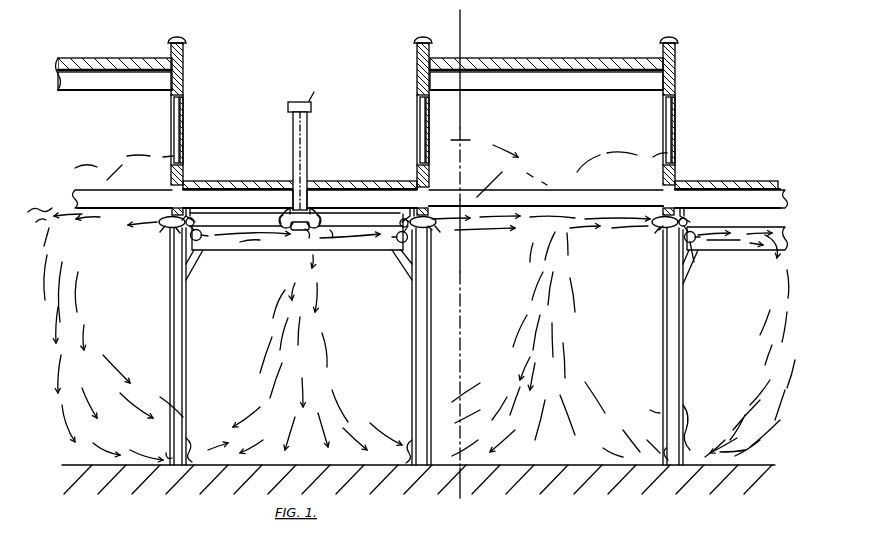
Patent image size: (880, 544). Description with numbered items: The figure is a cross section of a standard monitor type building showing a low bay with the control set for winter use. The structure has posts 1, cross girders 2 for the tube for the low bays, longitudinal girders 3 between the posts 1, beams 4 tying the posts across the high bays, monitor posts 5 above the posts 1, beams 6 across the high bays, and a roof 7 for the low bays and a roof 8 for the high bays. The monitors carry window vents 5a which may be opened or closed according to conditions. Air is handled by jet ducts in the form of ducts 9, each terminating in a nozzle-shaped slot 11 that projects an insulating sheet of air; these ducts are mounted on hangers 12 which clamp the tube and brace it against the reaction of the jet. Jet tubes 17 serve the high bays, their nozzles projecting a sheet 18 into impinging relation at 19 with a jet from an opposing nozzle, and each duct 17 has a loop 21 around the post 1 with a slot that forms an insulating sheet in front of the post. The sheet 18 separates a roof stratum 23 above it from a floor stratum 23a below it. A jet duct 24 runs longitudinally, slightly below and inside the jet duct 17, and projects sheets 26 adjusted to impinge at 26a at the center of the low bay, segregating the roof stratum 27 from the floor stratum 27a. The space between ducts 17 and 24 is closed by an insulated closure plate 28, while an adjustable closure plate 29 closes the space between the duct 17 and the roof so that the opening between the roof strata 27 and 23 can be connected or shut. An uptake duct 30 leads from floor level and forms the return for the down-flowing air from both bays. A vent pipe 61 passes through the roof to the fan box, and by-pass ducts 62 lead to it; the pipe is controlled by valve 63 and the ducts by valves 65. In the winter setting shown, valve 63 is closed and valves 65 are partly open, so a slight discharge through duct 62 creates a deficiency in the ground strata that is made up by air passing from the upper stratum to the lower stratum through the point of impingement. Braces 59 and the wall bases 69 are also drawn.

The post 1 is at (168, 329).
The cross girder 2 is at (228, 194).
The longitudinal girder 3 is at (140, 197).
The beam 4 is at (435, 306).
The monitor post 5 is at (172, 108).
The window vent 5a is at (183, 140).
The beam 6 is at (92, 90).
The roof 7 is at (199, 185).
The roof 8 is at (70, 66).
The duct 9 is at (694, 262).
The nozzle-shaped slot 11 is at (176, 230).
The hanger 12 is at (55, 265).
The jet tube 17 is at (196, 212).
The sheet 18 is at (108, 239).
The point of impingement 19 is at (527, 247).
The loop 21 is at (160, 226).
The roof stratum 23 is at (558, 146).
The floor stratum 23a is at (626, 363).
The jet duct 24 is at (190, 239).
The sheet 26 is at (250, 247).
The point of impingement 26a is at (290, 256).
The roof stratum 27 is at (332, 206).
The floor stratum 27a is at (378, 396).
The closure plate 28 is at (192, 227).
The adjustable closure plate 29 is at (423, 204).
The uptake duct 30 is at (187, 351).
The brace 59 is at (198, 270).
The vent pipe 61 is at (308, 146).
The by-pass duct 62 is at (292, 198).
The valve 63 is at (309, 228).
The valve 65 is at (282, 214).
The wall base 69 is at (189, 446).